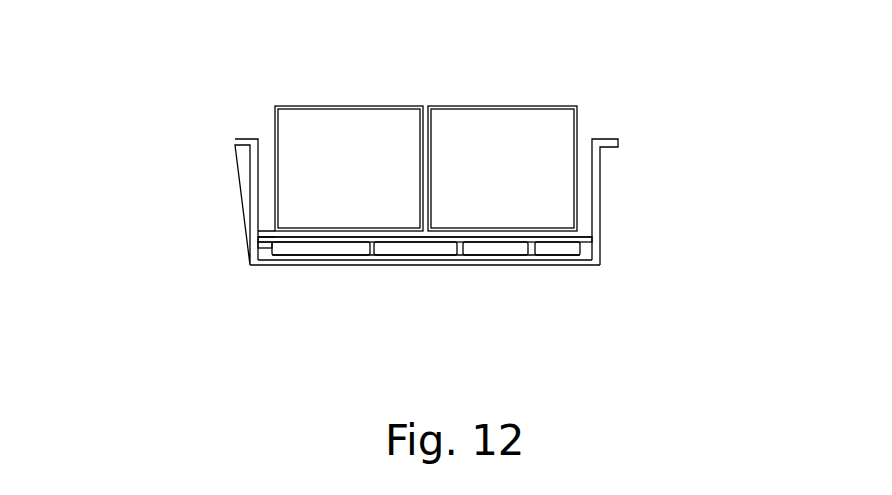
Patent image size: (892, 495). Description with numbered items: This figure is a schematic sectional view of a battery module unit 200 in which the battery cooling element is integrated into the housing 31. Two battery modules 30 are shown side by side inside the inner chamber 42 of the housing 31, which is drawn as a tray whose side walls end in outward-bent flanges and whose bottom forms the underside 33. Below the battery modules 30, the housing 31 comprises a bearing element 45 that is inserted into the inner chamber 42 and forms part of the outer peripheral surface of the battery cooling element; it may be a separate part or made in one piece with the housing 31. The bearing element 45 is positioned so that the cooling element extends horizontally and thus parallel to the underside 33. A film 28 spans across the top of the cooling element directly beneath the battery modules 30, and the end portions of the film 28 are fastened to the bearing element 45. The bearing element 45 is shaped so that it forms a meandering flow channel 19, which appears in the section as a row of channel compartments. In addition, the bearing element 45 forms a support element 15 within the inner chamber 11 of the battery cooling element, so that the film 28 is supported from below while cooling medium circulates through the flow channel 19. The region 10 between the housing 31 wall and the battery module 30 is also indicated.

The battery arrangement 200 is at (200, 94).
The battery module 30 is at (322, 122).
The film 28 is at (345, 238).
The housing 10 is at (265, 228).
The bearing element 45 is at (274, 247).
The housing 31 is at (226, 265).
The inner chamber 42 is at (588, 187).
The meandering flow channel 19 is at (307, 245).
The support element 15 is at (366, 243).
The inner chamber 11 is at (420, 250).
The underside 33 is at (531, 265).